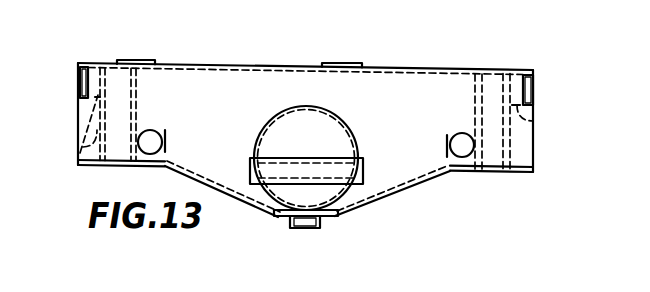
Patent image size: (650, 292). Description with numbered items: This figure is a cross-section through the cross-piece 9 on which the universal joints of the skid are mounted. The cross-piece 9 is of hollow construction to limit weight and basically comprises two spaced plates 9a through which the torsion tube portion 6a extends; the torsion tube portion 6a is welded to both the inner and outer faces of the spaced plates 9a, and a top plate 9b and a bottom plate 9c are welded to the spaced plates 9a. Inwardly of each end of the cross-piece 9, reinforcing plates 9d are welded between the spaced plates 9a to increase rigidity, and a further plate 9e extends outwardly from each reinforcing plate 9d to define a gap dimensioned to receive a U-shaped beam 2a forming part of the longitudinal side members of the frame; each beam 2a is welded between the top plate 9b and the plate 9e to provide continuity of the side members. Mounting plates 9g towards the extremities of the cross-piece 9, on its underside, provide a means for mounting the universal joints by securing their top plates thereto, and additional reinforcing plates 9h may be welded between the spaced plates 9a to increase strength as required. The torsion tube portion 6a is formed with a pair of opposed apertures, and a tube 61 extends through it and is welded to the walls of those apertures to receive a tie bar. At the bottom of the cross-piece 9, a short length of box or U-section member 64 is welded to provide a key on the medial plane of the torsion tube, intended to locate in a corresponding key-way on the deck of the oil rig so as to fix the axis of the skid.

The cross-piece 9 is at (208, 58).
The spaced plates 9a is at (401, 122).
The top plate 9b is at (407, 68).
The bottom plate 9c is at (403, 190).
The reinforcing plates 9d is at (75, 156).
The further plate 9e is at (78, 136).
The mounting plates 9g is at (493, 173).
The additional reinforcing plates 9h is at (131, 89).
The U-shaped beams 2a is at (80, 80).
The torsion tube portion 6a is at (281, 119).
The tube 61 is at (363, 180).
The box or U-section member 64 is at (297, 229).